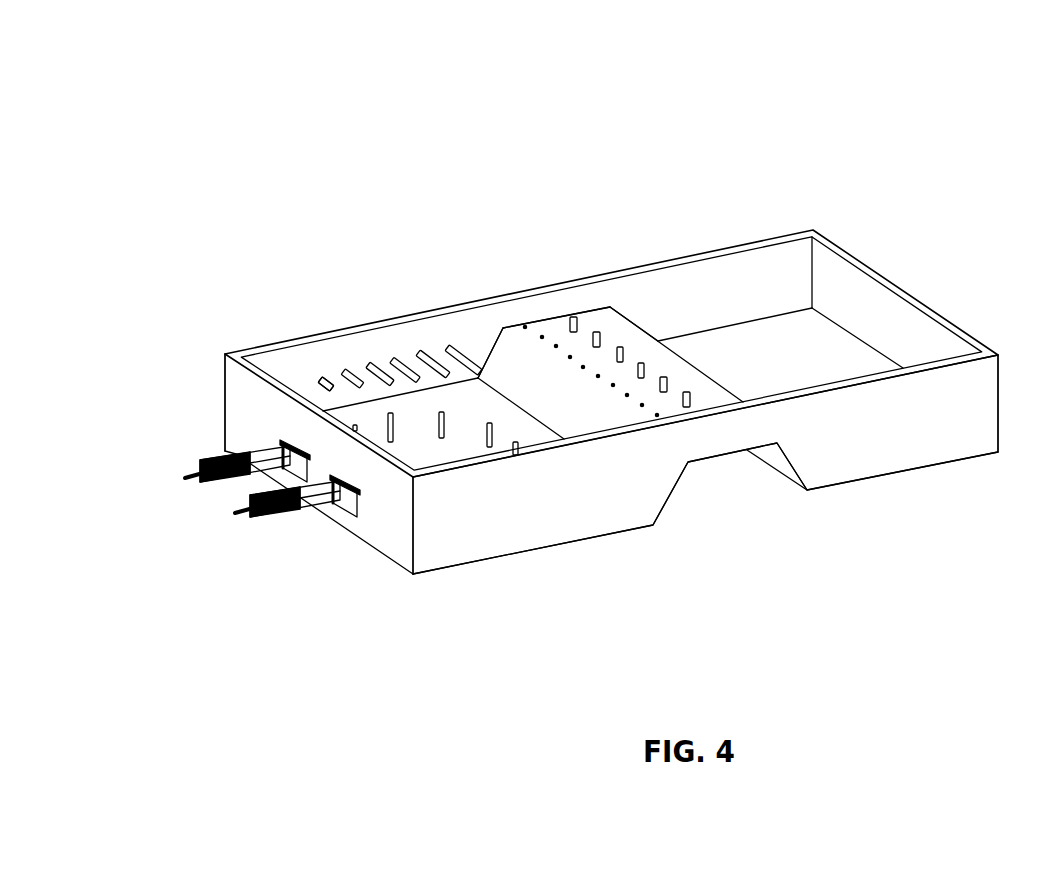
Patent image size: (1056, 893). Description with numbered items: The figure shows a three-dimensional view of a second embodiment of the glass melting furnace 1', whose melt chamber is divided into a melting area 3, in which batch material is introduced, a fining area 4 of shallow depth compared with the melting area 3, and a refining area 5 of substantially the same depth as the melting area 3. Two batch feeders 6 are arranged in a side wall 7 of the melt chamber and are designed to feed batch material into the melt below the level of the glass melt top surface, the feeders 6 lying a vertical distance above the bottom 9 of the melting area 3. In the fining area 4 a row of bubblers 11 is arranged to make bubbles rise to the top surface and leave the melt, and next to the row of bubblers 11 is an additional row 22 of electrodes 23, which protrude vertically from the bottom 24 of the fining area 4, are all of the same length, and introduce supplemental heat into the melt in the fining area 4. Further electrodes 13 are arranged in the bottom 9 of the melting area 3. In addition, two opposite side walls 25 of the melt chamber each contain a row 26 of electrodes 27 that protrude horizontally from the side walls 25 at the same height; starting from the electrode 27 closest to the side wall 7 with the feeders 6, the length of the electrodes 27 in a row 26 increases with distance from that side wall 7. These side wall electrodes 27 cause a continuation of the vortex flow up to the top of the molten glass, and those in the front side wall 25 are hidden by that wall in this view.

The furnace 1' is at (622, 314).
The melting area 3 is at (334, 302).
The fining area 4 is at (596, 262).
The refining area 5 is at (752, 267).
The batch feeders 6 is at (184, 480).
The side wall 7 is at (243, 407).
The bottom 9 is at (448, 568).
The bubblers 11 is at (563, 307).
The electrodes 13 is at (545, 441).
The row of electrodes 22 is at (526, 326).
The electrodes 23 is at (603, 333).
The bottom of the fining area 24 is at (643, 341).
The side walls 25 is at (300, 357).
The row of electrodes 26 is at (297, 385).
The electrodes 27 is at (457, 349).